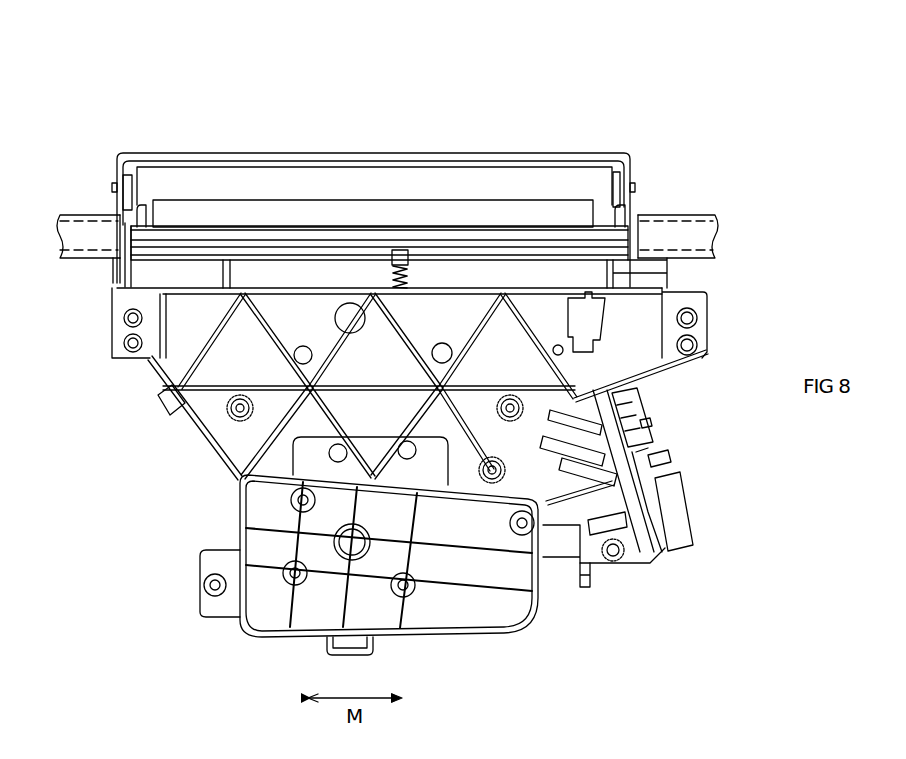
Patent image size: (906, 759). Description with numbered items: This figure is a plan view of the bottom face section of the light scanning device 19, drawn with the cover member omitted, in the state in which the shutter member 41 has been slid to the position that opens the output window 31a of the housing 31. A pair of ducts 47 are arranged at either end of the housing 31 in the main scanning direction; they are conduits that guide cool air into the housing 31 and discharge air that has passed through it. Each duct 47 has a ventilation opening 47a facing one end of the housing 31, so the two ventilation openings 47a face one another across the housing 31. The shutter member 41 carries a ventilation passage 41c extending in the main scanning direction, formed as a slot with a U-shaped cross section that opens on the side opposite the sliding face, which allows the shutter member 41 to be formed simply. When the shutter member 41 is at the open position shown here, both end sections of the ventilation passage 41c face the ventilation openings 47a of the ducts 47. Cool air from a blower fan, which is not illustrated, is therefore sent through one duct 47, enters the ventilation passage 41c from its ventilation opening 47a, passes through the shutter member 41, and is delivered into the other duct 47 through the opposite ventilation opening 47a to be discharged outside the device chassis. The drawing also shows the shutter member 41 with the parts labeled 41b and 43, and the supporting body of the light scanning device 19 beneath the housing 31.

The light scanning device 19 is at (92, 86).
The housing 31 is at (606, 146).
The output window 31a is at (348, 215).
The shutter member 41 is at (164, 270).
The hook portions 41b is at (147, 207).
The ventilation passage 41c is at (500, 240).
The spring 43 is at (408, 275).
The ducts 47 is at (93, 262).
The ventilation opening 47a is at (120, 237).